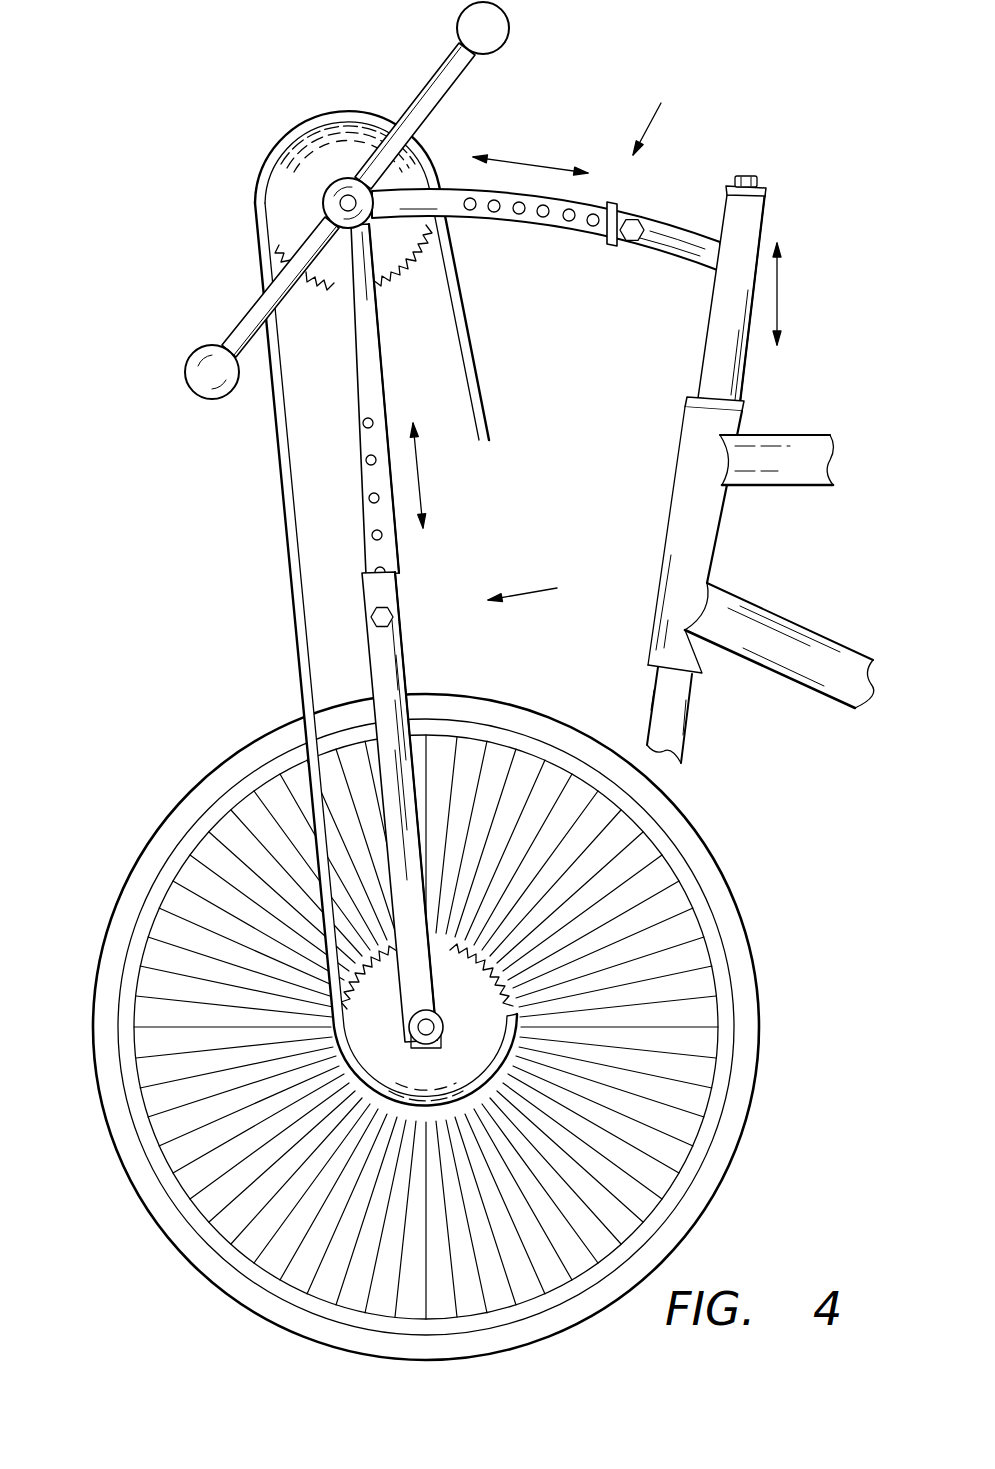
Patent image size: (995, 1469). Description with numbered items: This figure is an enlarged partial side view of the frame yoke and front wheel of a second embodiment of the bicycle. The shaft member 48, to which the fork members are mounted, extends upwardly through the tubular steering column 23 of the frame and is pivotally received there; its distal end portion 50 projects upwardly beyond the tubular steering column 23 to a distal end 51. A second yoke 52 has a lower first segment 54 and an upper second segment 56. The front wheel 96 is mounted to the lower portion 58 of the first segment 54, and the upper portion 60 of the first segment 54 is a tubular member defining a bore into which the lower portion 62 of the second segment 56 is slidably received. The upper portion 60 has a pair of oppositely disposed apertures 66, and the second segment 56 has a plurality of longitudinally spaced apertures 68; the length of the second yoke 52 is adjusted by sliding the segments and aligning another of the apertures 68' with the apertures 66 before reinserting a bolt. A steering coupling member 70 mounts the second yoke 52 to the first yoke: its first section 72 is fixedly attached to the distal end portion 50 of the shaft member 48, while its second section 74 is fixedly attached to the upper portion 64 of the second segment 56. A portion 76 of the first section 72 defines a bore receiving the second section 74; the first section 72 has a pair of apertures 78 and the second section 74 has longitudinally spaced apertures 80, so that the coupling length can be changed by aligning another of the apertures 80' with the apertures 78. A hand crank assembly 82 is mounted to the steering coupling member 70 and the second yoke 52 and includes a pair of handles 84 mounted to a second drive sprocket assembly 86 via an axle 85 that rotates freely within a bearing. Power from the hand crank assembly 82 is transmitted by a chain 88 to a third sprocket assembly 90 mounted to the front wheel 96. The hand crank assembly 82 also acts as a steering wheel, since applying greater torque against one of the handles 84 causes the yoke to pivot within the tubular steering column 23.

The tubular steering column 23 is at (723, 537).
The shaft member 48 is at (690, 705).
The distal end portion 50 is at (767, 222).
The distal end 51 is at (760, 178).
The second yoke 52 is at (544, 586).
The first segment 54 is at (412, 672).
The second segment 56 is at (380, 321).
The lower portion 58 is at (440, 995).
The upper portion 60 is at (402, 579).
The lower portion 62 is at (397, 541).
The upper portion 64 is at (350, 283).
The apertures 66 is at (394, 622).
The apertures 68 is at (338, 411).
The aperture 68' is at (339, 473).
The steering coupling member 70 is at (662, 115).
The first section 72 is at (663, 238).
The second section 74 is at (463, 190).
The portion 76 is at (610, 245).
The apertures 78 is at (636, 243).
The apertures 80 is at (531, 239).
The aperture 80' is at (500, 241).
The hand crank assembly 82 is at (287, 183).
The handles 84 is at (510, 28).
The axle 85 is at (340, 202).
The second drive sprocket assembly 86 is at (346, 150).
The chain 88 is at (285, 495).
The third sprocket assembly 90 is at (375, 1010).
The front wheel 96 is at (763, 1035).